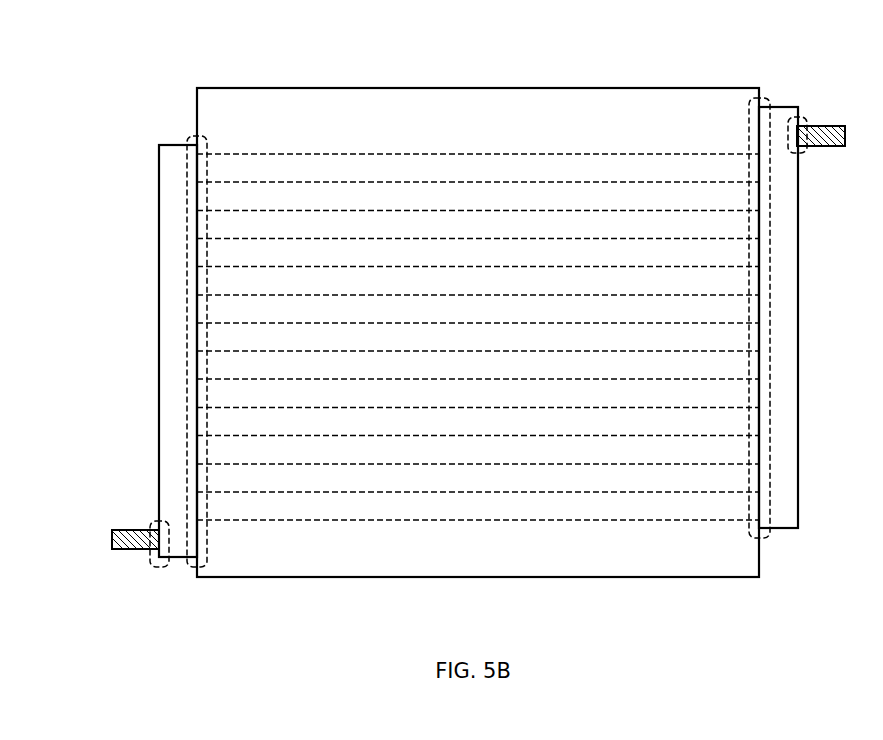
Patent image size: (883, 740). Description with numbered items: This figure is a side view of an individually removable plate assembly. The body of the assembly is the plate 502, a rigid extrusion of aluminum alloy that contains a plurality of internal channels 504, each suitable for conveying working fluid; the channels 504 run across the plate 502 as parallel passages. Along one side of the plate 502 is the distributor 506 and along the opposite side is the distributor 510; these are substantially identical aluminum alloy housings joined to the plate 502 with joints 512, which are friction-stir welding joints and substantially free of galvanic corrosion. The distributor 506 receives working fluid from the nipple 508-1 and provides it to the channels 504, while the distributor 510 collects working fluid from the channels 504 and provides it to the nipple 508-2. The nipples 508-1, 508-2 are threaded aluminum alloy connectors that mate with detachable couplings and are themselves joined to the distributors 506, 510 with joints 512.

The plate 502 is at (273, 577).
The internal channels 504 is at (350, 178).
The distributor 506 is at (159, 200).
The nipple 508-1 is at (132, 550).
The nipple 508-2 is at (826, 126).
The distributor 510 is at (798, 351).
The joints 512 is at (798, 117).